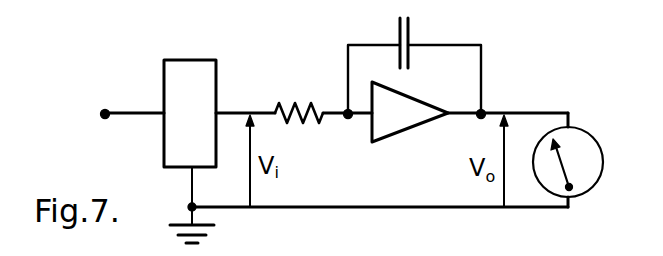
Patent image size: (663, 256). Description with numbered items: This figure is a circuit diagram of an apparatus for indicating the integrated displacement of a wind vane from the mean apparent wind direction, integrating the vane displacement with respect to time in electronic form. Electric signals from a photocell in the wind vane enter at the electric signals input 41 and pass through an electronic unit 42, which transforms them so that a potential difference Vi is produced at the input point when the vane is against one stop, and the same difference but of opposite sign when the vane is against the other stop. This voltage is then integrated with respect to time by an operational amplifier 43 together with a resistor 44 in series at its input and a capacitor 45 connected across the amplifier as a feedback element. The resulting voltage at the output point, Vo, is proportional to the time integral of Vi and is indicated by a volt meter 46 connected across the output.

The electric signals input 41 is at (103, 112).
The electronic unit 42 is at (190, 77).
The operational amplifier 43 is at (398, 121).
The resistor 44 is at (285, 103).
The capacitor 45 is at (413, 33).
The volt meter 46 is at (592, 168).